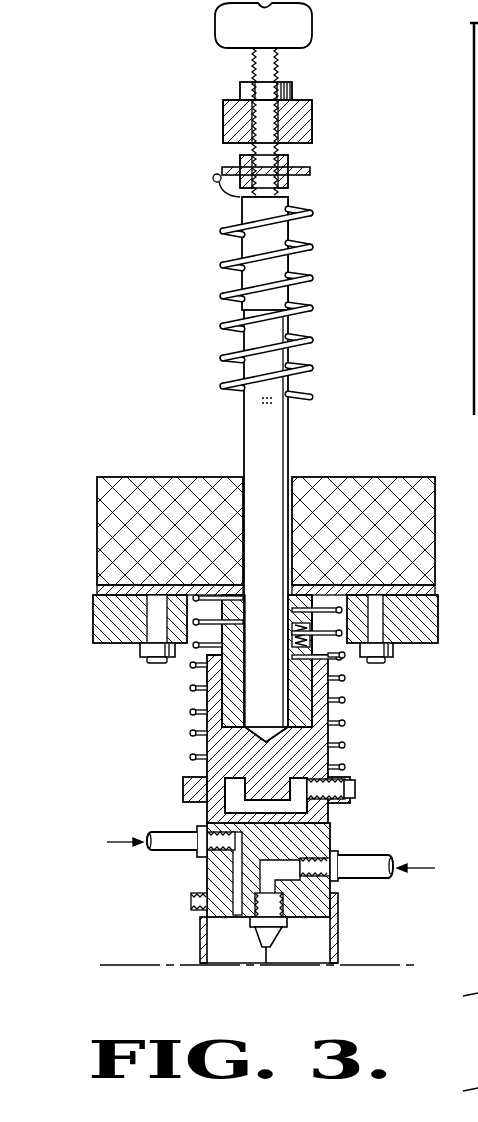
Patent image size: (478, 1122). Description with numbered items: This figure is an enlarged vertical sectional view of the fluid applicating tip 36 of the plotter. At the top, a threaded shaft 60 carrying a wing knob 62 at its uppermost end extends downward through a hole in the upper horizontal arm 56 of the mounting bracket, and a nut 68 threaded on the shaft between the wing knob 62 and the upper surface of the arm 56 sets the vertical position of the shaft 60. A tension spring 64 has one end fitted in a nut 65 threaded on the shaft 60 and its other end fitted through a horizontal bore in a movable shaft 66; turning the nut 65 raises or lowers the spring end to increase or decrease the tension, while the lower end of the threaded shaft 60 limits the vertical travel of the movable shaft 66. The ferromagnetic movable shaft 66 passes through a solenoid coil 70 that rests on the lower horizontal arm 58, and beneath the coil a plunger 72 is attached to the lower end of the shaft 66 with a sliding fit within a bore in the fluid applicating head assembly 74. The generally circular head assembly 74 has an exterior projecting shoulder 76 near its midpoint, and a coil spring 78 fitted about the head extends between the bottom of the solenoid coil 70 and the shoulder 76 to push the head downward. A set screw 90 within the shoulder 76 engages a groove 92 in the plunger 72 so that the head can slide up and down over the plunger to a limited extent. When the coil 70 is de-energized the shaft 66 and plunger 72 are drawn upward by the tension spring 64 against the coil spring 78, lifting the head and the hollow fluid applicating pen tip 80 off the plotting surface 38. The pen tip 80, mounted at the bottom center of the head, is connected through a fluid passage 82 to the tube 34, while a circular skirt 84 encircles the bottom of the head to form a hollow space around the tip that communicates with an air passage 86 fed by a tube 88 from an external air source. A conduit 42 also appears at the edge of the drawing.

The tube 34 is at (388, 860).
The fluid applicating tip 36 is at (82, 656).
The plotting surface 38 is at (375, 965).
The conduit 42 is at (457, 1044).
The upper horizontal arm 56 is at (315, 122).
The lower horizontal arm 58 is at (437, 616).
The threaded shaft 60 is at (252, 62).
The wing knob 62 is at (311, 27).
The tension spring 64 is at (310, 252).
The nut 65 is at (240, 163).
The movable shaft 66 is at (290, 442).
The nut 68 is at (293, 89).
The solenoid coil 70 is at (137, 477).
The plunger 72 is at (232, 690).
The fluid applicating head assembly 74 is at (213, 745).
The shoulder 76 is at (186, 795).
The coil spring 78 is at (193, 735).
The fluid applicating pen tip 80 is at (265, 950).
The fluid passage 82 is at (297, 893).
The circular skirt 84 is at (200, 934).
The air passage 86 is at (233, 868).
The tube 88 is at (160, 852).
The set screw 90 is at (356, 790).
The groove 92 is at (302, 778).